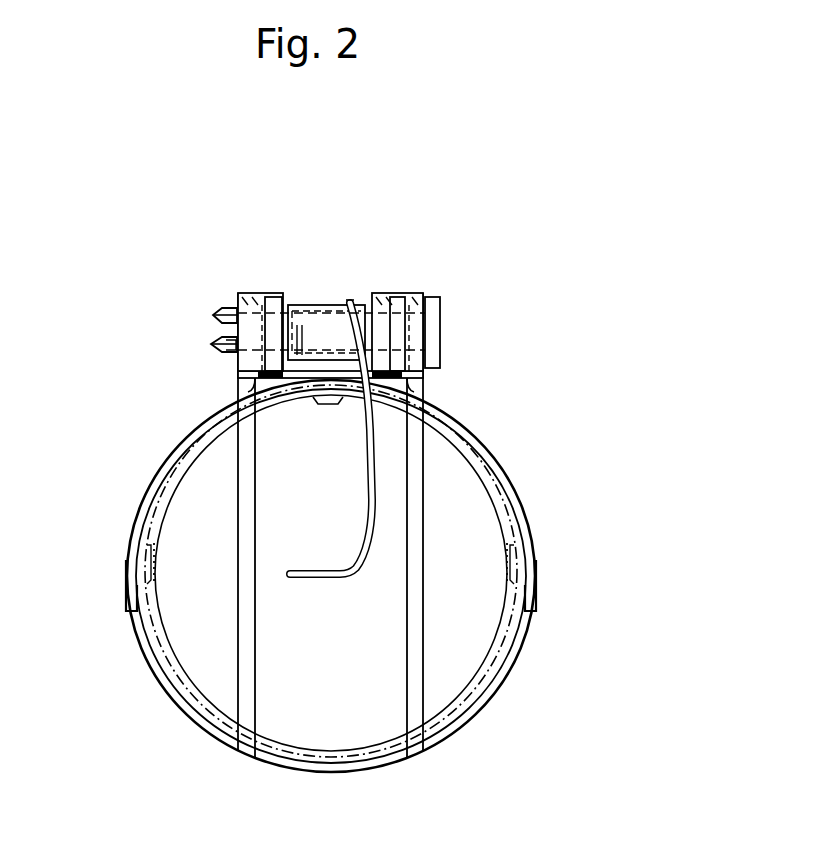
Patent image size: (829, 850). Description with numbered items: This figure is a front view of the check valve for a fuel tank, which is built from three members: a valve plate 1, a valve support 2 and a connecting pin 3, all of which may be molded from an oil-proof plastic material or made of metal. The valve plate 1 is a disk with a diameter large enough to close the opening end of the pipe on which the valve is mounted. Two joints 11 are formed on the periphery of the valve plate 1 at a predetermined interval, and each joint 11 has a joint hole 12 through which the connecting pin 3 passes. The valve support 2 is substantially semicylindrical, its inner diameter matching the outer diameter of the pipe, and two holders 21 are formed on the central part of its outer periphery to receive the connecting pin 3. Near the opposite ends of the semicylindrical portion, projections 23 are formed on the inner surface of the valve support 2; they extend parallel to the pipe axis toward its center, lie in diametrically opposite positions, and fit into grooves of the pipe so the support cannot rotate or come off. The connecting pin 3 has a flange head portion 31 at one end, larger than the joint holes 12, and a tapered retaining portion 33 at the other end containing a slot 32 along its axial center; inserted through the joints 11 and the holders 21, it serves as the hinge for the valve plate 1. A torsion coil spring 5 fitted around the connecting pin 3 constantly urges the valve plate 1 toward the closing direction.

The valve plate 1 is at (372, 722).
The valve support 2 is at (508, 462).
The connecting pin 3 is at (447, 299).
The torsion coil spring 5 is at (348, 302).
The joint 11 is at (238, 299).
The joint hole 12 is at (232, 348).
The holder 21 is at (275, 292).
The projection 23 is at (145, 577).
The flange head portion 31 is at (440, 352).
The slot 32 is at (216, 341).
The retaining portion 33 is at (222, 308).